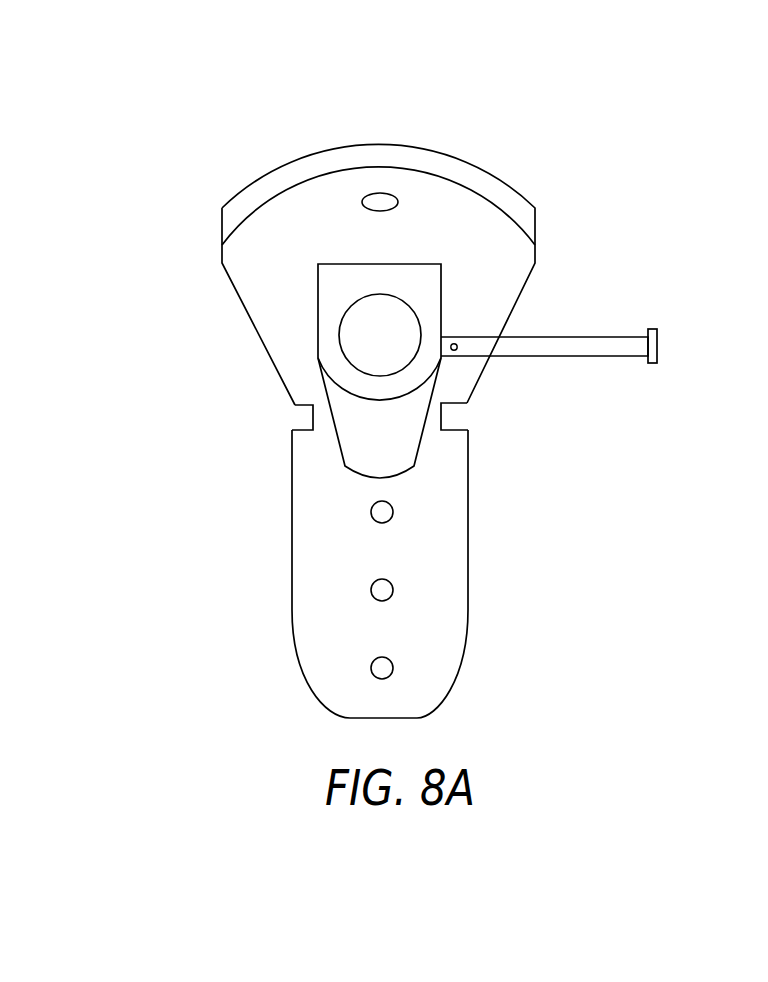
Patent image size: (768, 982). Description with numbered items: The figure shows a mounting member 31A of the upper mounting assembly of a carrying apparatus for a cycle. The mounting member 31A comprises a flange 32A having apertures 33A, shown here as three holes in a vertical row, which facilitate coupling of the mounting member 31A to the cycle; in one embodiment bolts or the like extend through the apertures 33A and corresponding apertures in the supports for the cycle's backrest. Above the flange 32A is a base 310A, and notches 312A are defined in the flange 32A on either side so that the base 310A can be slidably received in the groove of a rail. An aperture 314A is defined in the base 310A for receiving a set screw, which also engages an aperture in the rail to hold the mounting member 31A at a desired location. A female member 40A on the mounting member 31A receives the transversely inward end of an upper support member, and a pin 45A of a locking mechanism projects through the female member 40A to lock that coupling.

The mounting member 31A is at (507, 143).
The base 310A is at (488, 265).
The notch 312A is at (288, 417).
The aperture 314A is at (380, 202).
The flange 32A is at (435, 583).
The apertures 33A is at (371, 513).
The female member 40A is at (332, 310).
The pin 45A is at (658, 340).